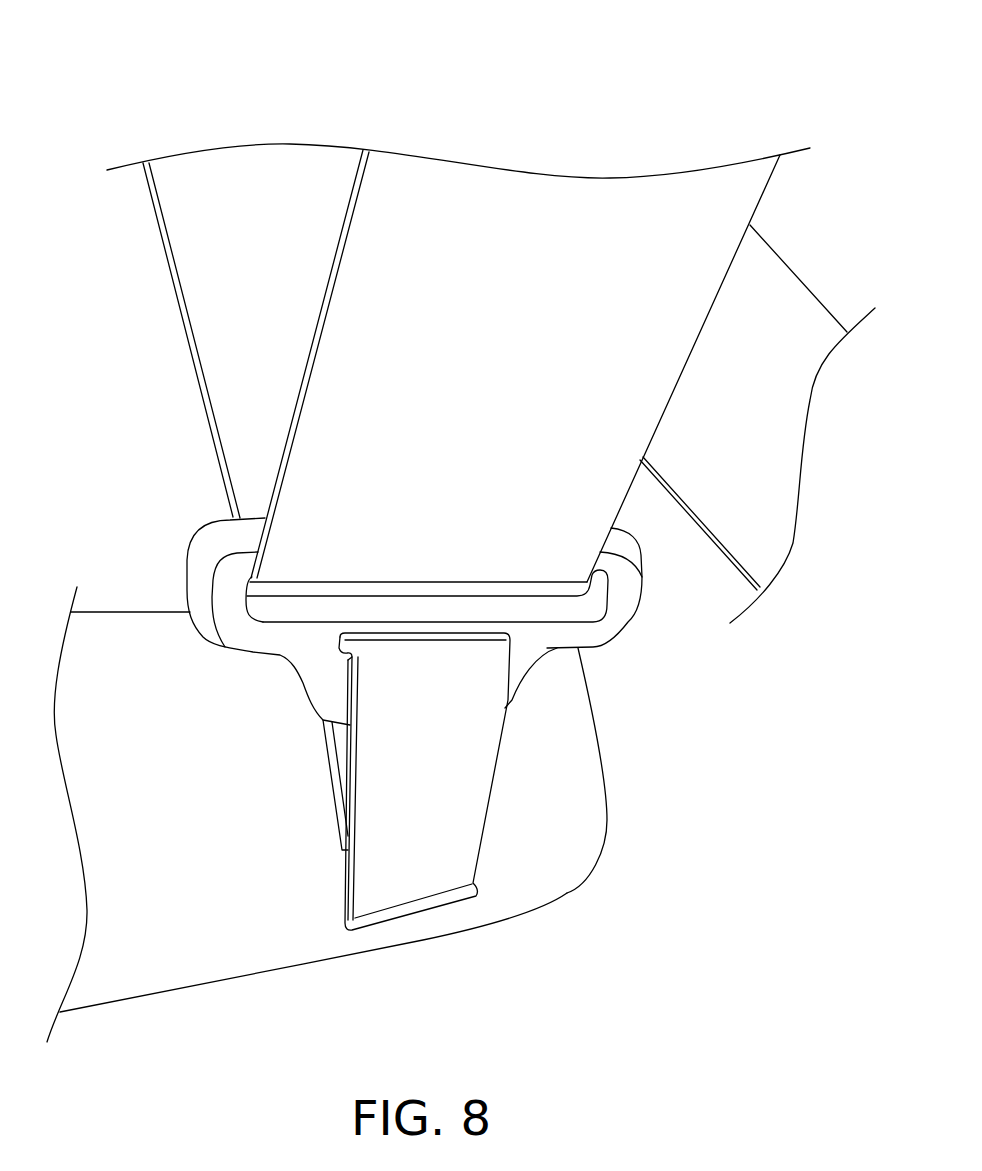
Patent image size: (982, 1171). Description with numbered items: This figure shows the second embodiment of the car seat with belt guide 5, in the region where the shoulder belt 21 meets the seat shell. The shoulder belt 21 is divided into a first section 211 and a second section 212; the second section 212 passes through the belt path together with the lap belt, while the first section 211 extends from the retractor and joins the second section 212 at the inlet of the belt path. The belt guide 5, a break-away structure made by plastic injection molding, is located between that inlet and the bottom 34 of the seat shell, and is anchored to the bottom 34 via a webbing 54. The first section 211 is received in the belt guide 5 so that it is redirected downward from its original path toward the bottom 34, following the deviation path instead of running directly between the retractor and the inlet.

The shoulder belt 21 is at (495, 58).
The second section 212 is at (260, 217).
The first section 211 is at (497, 213).
The belt guide 5 is at (205, 560).
The webbing 54 is at (438, 812).
The bottom 34 is at (285, 933).